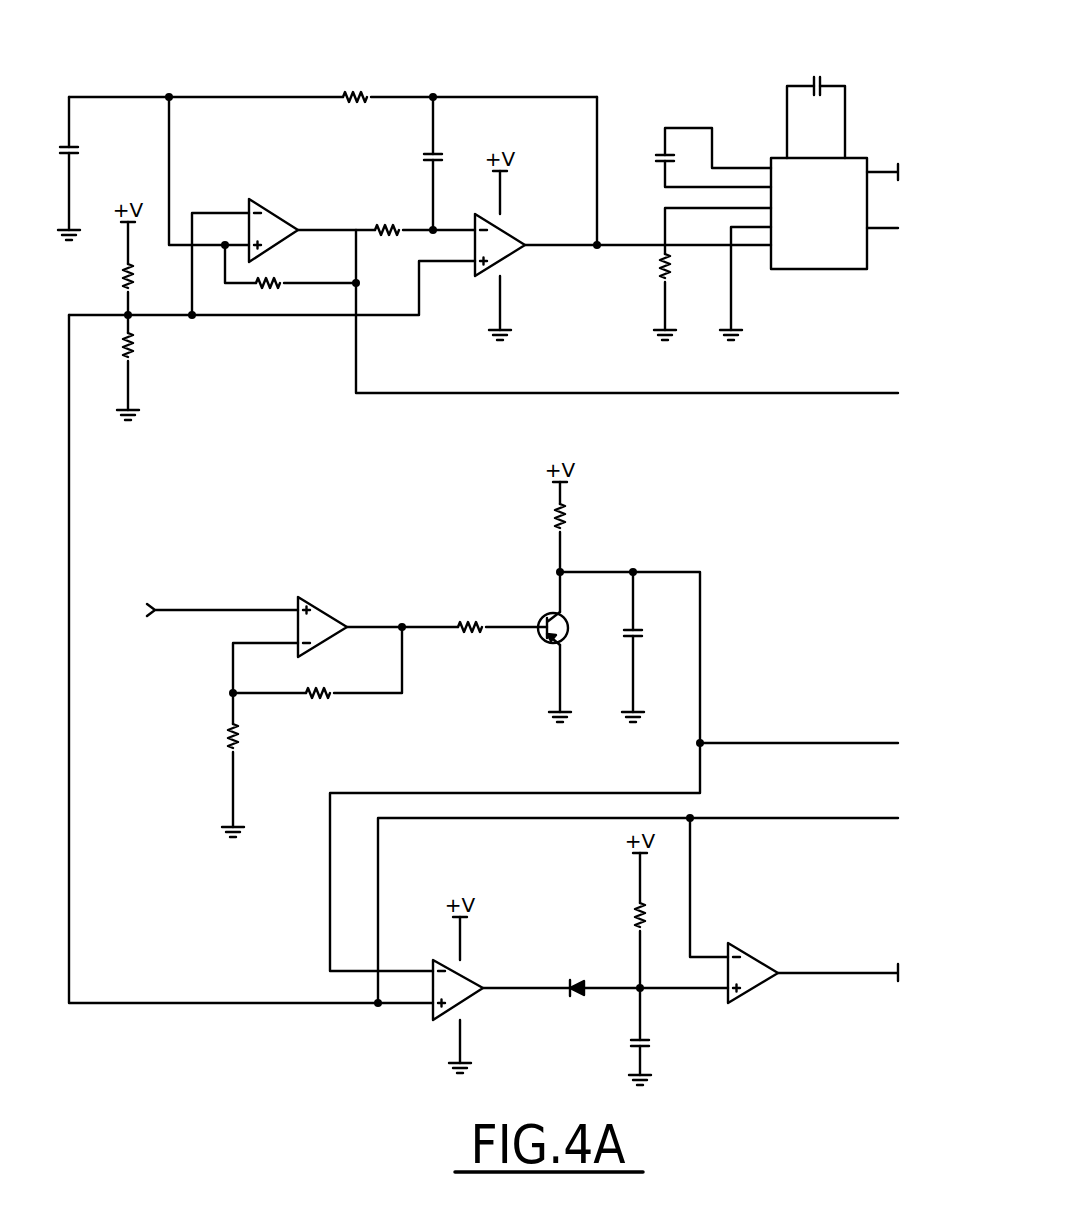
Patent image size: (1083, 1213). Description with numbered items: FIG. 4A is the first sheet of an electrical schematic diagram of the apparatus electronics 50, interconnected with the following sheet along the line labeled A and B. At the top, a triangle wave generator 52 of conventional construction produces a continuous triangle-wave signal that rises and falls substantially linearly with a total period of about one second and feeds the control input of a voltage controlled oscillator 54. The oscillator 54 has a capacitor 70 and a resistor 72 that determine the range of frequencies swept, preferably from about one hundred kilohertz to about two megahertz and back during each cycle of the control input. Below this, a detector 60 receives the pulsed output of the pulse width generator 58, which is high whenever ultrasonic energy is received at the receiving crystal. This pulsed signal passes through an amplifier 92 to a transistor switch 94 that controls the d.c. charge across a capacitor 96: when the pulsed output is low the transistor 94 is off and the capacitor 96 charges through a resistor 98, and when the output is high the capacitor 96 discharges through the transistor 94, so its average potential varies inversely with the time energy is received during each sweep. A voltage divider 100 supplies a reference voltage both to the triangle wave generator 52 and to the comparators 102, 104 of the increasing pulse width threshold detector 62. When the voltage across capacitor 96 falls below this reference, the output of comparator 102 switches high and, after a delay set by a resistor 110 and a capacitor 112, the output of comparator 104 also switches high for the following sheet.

The oscillator drive circuit 50 is at (644, 36).
The triangle wave generator 52 is at (321, 164).
The voltage controlled oscillator 54 is at (797, 249).
The pulse width generator 58 is at (192, 611).
The detector 60 is at (470, 568).
The increasing pulse width threshold detector 62 is at (585, 1034).
The capacitor 70 is at (665, 158).
The resistor 72 is at (660, 276).
The amplifier 92 is at (318, 606).
The transistor switch 94 is at (548, 644).
The capacitor 96 is at (640, 634).
The resistor 98 is at (567, 512).
The voltage divider 100 is at (117, 292).
The comparator 102 is at (470, 979).
The comparator 104 is at (762, 962).
The resistor 110 is at (640, 908).
The capacitor 112 is at (652, 1044).